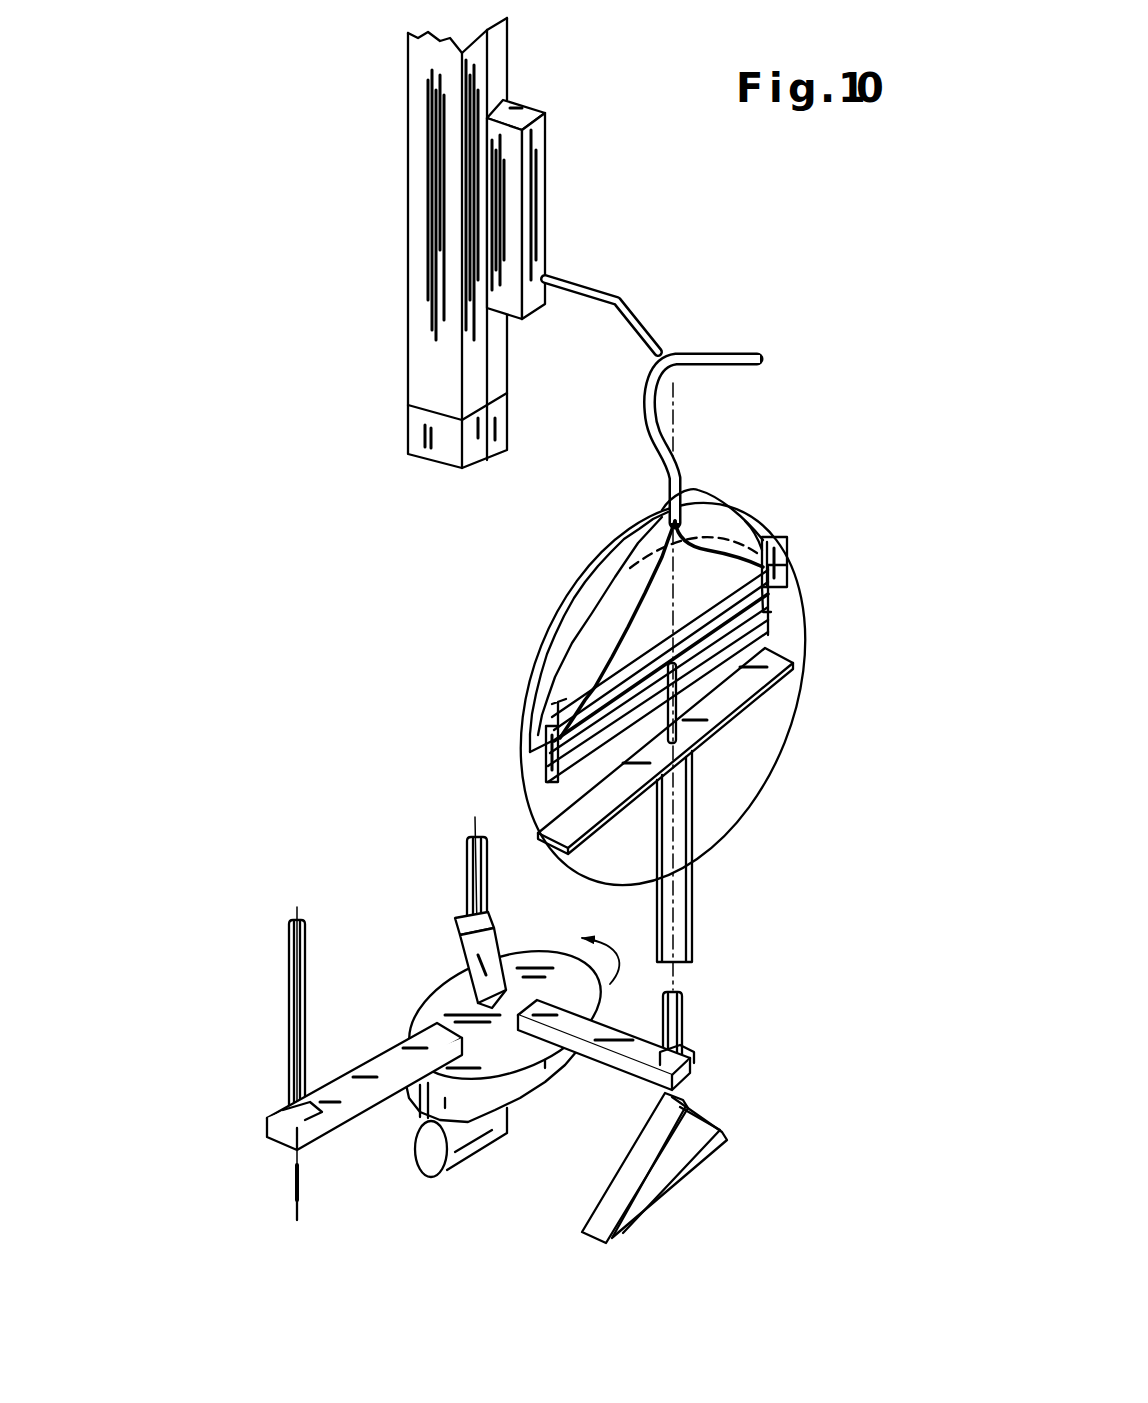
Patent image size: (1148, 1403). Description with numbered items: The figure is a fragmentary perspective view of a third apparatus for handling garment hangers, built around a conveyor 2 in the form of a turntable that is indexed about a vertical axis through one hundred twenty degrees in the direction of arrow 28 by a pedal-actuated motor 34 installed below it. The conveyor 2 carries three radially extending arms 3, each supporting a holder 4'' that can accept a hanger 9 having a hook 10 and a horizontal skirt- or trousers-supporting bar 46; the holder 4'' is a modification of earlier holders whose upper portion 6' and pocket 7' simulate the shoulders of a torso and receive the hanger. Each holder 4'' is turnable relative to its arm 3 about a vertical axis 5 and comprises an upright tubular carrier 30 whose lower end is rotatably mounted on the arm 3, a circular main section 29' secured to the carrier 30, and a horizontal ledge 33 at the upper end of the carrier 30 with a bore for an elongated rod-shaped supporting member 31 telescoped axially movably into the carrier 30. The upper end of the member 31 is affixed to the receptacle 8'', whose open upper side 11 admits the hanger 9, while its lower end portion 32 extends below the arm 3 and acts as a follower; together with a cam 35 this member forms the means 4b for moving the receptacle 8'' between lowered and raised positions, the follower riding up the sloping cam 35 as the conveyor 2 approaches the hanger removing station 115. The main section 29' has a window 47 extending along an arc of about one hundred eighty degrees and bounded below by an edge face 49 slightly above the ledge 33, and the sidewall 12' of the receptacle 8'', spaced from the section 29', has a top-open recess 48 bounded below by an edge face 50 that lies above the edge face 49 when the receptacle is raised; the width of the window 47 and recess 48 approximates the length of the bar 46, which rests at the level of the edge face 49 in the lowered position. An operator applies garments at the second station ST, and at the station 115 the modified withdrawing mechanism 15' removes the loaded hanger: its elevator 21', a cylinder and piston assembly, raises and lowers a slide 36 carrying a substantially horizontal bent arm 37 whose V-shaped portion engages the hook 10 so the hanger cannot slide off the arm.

The elevator 21' is at (420, 243).
The withdrawing mechanism 15' is at (473, 243).
The slide 36 is at (546, 202).
The arm 37 is at (597, 286).
The hook 10 is at (678, 352).
The third station 115 is at (803, 437).
The knife carrier 6' is at (663, 694).
The garment hanger 9 is at (636, 572).
The recess 48 is at (753, 560).
The open upper side 11 is at (773, 537).
The receptacle 8'' is at (813, 542).
The window 47 is at (582, 627).
The bar 46 is at (714, 607).
The sidewall 12' is at (649, 671).
The holder 4'' is at (556, 901).
The clamping plate 7' is at (513, 694).
The ledge 33 is at (773, 677).
The supporting member 31 is at (680, 703).
The main section 29' is at (545, 831).
The edge face 50 is at (619, 718).
The carrier 30 is at (694, 818).
The vertical axis 5 is at (672, 875).
The edge face 49 is at (574, 762).
The arrow 28 is at (610, 984).
The arm 3 is at (503, 947).
The conveyor 2 is at (433, 990).
The second station ST is at (235, 1096).
The lower end portion 32 is at (712, 1141).
The motor 34 is at (448, 1168).
The means for moving the receptacle 4b is at (633, 1168).
The cam 35 is at (648, 1184).